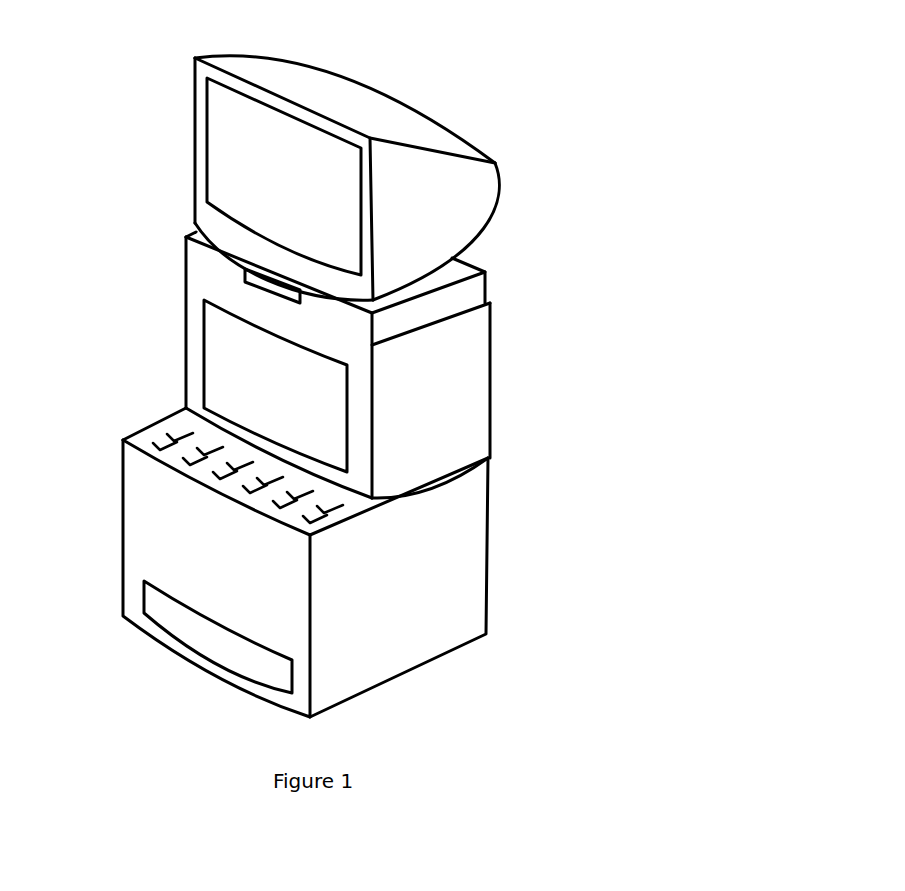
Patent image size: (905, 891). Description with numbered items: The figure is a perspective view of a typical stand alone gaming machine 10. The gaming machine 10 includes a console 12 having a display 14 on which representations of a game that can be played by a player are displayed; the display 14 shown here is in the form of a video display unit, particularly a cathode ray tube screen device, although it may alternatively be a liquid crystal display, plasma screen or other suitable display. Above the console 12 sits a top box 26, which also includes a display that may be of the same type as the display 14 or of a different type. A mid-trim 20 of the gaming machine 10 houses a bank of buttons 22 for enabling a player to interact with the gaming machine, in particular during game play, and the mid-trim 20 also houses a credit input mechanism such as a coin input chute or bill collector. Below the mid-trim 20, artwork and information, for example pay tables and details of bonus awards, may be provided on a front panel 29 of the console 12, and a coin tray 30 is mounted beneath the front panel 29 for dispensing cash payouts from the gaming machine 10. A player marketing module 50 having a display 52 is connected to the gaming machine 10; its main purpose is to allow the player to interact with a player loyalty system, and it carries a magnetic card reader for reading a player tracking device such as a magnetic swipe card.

The gaming machine 10 is at (488, 88).
The console 12 is at (454, 382).
The display 14 is at (236, 346).
The mid-trim 20 is at (141, 415).
The bank of buttons 22 is at (175, 465).
The top box 26 is at (183, 116).
The front panel 29 is at (135, 538).
The coin tray 30 is at (196, 632).
The player marketing module 50 is at (500, 286).
The display 52 is at (250, 280).